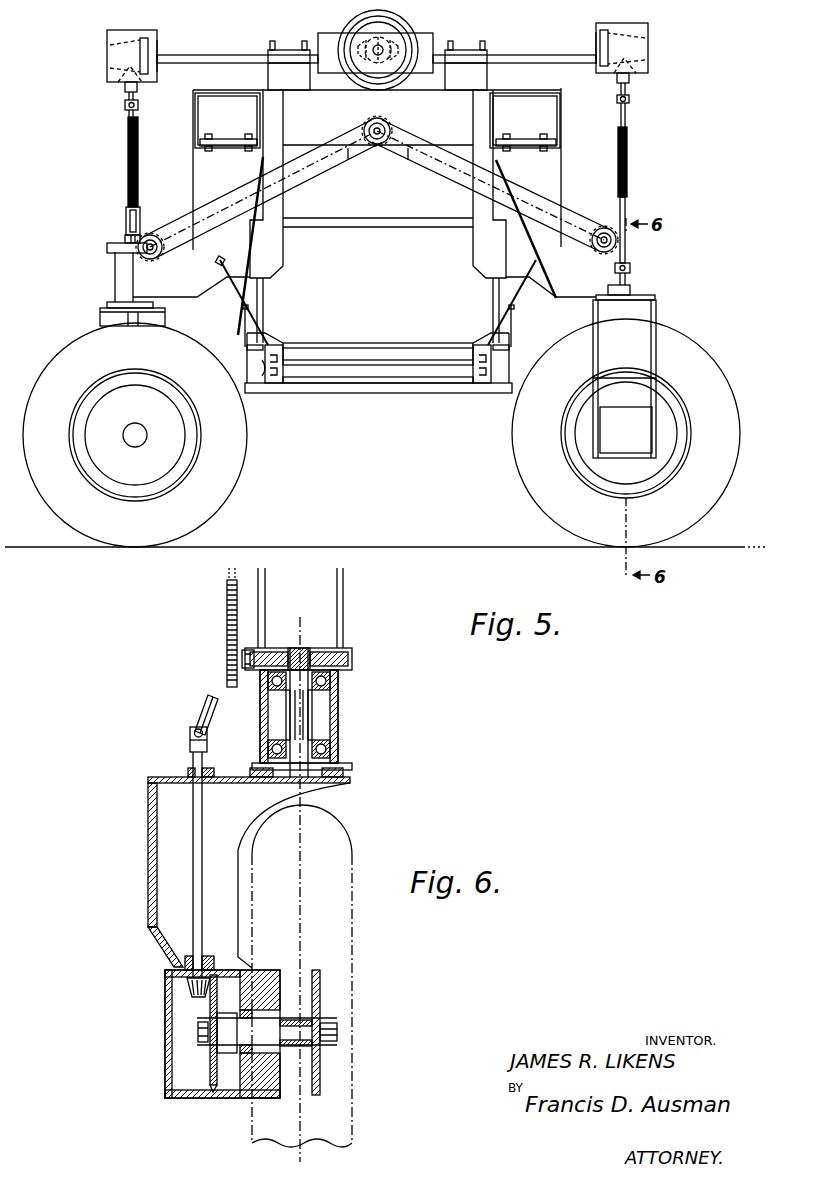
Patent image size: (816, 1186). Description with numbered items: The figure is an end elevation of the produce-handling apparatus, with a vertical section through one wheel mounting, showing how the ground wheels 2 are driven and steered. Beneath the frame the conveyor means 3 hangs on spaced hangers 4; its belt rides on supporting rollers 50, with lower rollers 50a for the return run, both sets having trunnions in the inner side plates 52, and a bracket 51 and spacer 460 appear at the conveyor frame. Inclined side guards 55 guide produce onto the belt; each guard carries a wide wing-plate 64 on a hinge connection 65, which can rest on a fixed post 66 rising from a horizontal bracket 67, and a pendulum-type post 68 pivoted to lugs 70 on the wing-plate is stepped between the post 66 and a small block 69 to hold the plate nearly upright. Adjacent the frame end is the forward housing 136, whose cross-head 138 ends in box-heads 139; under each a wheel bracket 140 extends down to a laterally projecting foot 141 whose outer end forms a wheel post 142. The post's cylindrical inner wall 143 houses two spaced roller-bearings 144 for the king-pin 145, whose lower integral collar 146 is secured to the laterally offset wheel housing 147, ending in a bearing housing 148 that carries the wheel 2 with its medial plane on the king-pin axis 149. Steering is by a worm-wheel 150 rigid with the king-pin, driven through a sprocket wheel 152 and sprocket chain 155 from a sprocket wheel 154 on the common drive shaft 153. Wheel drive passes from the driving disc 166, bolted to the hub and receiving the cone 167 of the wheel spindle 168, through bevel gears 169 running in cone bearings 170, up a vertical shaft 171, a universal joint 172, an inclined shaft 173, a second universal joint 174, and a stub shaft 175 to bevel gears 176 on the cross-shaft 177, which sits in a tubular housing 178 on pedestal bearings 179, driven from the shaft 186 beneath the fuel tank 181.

In FIG. 5, the ground wheel 2 is at (222, 496).
In FIG. 6, the ground wheel 2 is at (355, 953).
In FIG. 5, the conveyor means 3 is at (440, 379).
In FIG. 5, the hanger 4 is at (264, 300).
In FIG. 5, the supporting roller 50 is at (363, 352).
In FIG. 5, the lower roller 50a is at (366, 379).
In FIG. 5, the bracket 51 is at (262, 368).
In FIG. 5, the inner side plate 52 is at (273, 385).
In FIG. 5, the inclined side guard 55 is at (283, 343).
In FIG. 5, the wing-plate 64 is at (227, 276).
In FIG. 5, the hinge connection 65 is at (268, 333).
In FIG. 5, the fixed post 66 is at (265, 312).
In FIG. 5, the horizontal bracket 67 is at (250, 347).
In FIG. 5, the pendulum-type post 68 is at (242, 323).
In FIG. 5, the small block 69 is at (240, 342).
In FIG. 5, the lug 70 is at (243, 312).
In FIG. 5, the forward housing 136 is at (408, 152).
In FIG. 5, the cross-head 138 is at (348, 152).
In FIG. 5, the box-head 139 is at (195, 108).
In FIG. 5, the wheel bracket 140 is at (203, 177).
In FIG. 6, the wheel bracket 140 is at (326, 578).
In FIG. 5, the foot 141 is at (150, 281).
In FIG. 6, the foot 141 is at (345, 680).
In FIG. 5, the wheel post 142 is at (115, 263).
In FIG. 6, the wheel post 142 is at (337, 737).
In FIG. 6, the cylindrical inner wall 143 is at (330, 720).
In FIG. 6, the roller-bearing 144 is at (330, 692).
In FIG. 6, the king-pin 145 is at (295, 719).
In FIG. 6, the integral collar 146 is at (313, 789).
In FIG. 5, the wheel housing 147 is at (100, 318).
In FIG. 6, the wheel housing 147 is at (177, 813).
In FIG. 5, the bearing housing 148 is at (626, 430).
In FIG. 6, the bearing housing 148 is at (233, 1096).
In FIG. 6, the axis 149 is at (301, 625).
In FIG. 6, the worm-wheel 150 is at (330, 652).
In FIG. 5, the sprocket wheel 152 is at (606, 222).
In FIG. 6, the sprocket wheel 152 is at (242, 660).
In FIG. 5, the common drive shaft 153 is at (372, 120).
In FIG. 5, the sprocket wheel 154 is at (383, 119).
In FIG. 5, the sprocket chain 155 is at (323, 145).
In FIG. 6, the sprocket chain 155 is at (227, 609).
In FIG. 6, the driving disc 166 is at (322, 1001).
In FIG. 6, the cone 167 is at (307, 1060).
In FIG. 6, the wheel spindle 168 is at (257, 1027).
In FIG. 6, the bevel gears 169 is at (213, 1012).
In FIG. 6, the cone bearing 170 is at (258, 1085).
In FIG. 6, the vertical shaft 171 is at (197, 875).
In FIG. 5, the universal joint 172 is at (632, 270).
In FIG. 6, the universal joint 172 is at (190, 718).
In FIG. 5, the inclined shaft 173 is at (128, 234).
In FIG. 6, the inclined shaft 173 is at (207, 700).
In FIG. 5, the universal joint 174 is at (125, 106).
In FIG. 5, the stub shaft 175 is at (125, 92).
In FIG. 5, the bevel gears 176 is at (107, 50).
In FIG. 5, the cross-shaft 177 is at (157, 33).
In FIG. 5, the tubular housing 178 is at (227, 53).
In FIG. 5, the pedestal bearing 179 is at (268, 72).
In FIG. 5, the fuel tank 181 is at (398, 24).
In FIG. 5, the shaft 186 is at (412, 32).
In FIG. 5, the rail spacer 460 is at (328, 345).